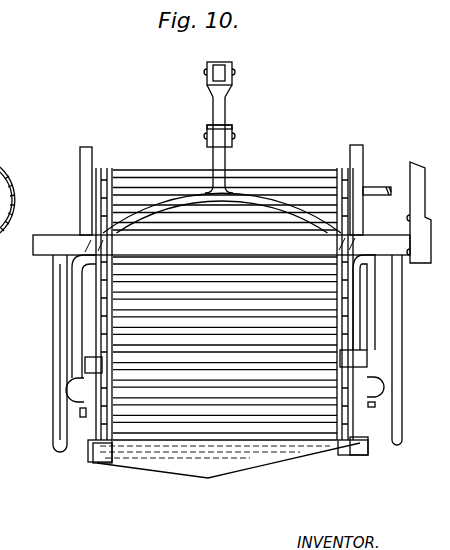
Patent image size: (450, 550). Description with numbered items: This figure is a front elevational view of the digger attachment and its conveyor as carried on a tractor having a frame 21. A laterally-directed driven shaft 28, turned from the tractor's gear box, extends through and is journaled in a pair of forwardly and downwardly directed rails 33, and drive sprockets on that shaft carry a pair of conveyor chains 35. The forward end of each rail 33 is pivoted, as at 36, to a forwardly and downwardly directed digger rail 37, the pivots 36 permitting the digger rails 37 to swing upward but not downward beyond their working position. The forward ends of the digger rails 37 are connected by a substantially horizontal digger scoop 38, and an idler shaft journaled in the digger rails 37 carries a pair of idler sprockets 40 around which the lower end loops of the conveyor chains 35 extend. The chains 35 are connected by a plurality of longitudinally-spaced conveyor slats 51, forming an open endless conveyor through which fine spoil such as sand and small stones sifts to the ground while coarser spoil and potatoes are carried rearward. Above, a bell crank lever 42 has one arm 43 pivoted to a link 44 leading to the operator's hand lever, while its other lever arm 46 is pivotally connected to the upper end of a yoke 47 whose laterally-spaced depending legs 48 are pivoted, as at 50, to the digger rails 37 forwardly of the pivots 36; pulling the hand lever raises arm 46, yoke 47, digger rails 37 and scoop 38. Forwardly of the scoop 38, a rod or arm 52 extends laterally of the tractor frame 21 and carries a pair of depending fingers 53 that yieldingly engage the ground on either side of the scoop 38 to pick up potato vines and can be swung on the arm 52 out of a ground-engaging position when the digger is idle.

The tractor frame 21 is at (410, 170).
The driven shaft 28 is at (380, 187).
The rail 33 is at (88, 147).
The conveyor chain 35 is at (82, 175).
The pivot 36 is at (88, 363).
The digger rail 37 is at (90, 445).
The digger scoop 38 is at (227, 468).
The idler sprocket 40 is at (108, 443).
The bell crank lever 42 is at (236, 121).
The arm 43 is at (224, 95).
The link 44 is at (218, 64).
The lever arm 46 is at (222, 135).
The yoke 47 is at (228, 160).
The leg 48 is at (78, 335).
The pivot 50 is at (77, 395).
The conveyor slat 51 is at (120, 185).
The rod or arm 52 is at (45, 242).
The finger 53 is at (60, 383).